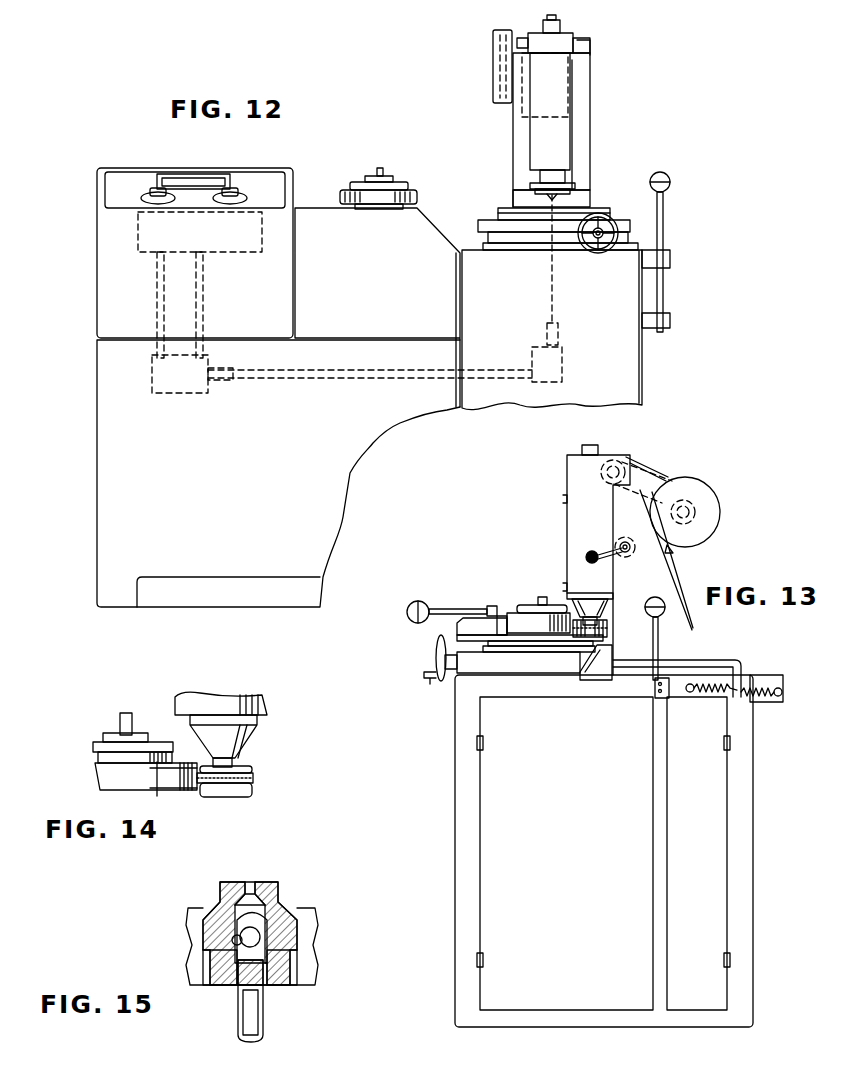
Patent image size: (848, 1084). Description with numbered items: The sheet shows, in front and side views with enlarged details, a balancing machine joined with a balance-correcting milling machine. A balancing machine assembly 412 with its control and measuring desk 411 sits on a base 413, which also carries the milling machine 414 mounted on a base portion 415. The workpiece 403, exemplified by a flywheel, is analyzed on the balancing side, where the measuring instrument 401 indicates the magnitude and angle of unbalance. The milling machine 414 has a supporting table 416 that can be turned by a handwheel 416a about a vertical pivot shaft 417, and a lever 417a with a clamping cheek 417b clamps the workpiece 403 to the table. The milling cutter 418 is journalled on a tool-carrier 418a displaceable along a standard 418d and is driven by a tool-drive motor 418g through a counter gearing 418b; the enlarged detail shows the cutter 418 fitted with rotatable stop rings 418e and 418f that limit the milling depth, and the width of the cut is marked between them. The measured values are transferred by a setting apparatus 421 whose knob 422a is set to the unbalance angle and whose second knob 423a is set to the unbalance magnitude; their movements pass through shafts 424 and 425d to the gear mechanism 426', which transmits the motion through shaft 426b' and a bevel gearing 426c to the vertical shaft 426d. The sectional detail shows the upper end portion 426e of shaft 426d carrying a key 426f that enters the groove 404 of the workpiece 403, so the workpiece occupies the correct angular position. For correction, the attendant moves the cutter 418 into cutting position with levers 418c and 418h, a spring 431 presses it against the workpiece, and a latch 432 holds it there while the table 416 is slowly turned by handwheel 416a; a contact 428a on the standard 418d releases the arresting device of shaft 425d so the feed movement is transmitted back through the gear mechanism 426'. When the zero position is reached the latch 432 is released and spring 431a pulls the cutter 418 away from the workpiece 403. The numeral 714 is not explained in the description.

In FIG. 12, the measuring instrument 401 is at (201, 177).
In FIG. 12, the workpiece 403 is at (523, 198).
In FIG. 13, the workpiece 403 is at (511, 620).
In FIG. 14, the workpiece 403 is at (105, 777).
In FIG. 15, the workpiece 403 is at (306, 916).
In FIG. 15, the groove 404 is at (243, 912).
In FIG. 12, the control and measuring desk 411 is at (291, 170).
In FIG. 12, the balancing machine assembly 412 is at (300, 212).
In FIG. 12, the base 413 is at (380, 168).
In FIG. 12, the milling machine 414 is at (573, 111).
In FIG. 13, the milling machine 414 is at (567, 545).
In FIG. 12, the base portion 415 is at (642, 368).
In FIG. 13, the base portion 415 is at (483, 811).
In FIG. 12, the supporting table 416 is at (602, 216).
In FIG. 13, the supporting table 416 is at (457, 629).
In FIG. 12, the handwheel 416a is at (618, 234).
In FIG. 13, the handwheel 416a is at (440, 658).
In FIG. 13, the vertical pivot shaft 417 is at (542, 600).
In FIG. 14, the vertical pivot shaft 417 is at (126, 712).
In FIG. 13, the lever 417a is at (438, 604).
In FIG. 13, the clamping cheek 417b is at (502, 645).
In FIG. 13, the milling cutter 418 is at (607, 630).
In FIG. 14, the milling cutter 418 is at (253, 779).
In FIG. 13, the tool-carrier 418a is at (567, 565).
In FIG. 12, the counter gearing 418b is at (493, 50).
In FIG. 13, the counter gearing 418b is at (631, 463).
In FIG. 12, the lever 418c is at (672, 242).
In FIG. 13, the lever 418c is at (660, 636).
In FIG. 13, the standard 418d is at (668, 571).
In FIG. 14, the rotatable stop ring 418e is at (246, 768).
In FIG. 14, the rotatable stop ring 418f is at (236, 798).
In FIG. 12, the tool-drive motor 418g is at (590, 58).
In FIG. 13, the tool-drive motor 418g is at (705, 493).
In FIG. 13, the lever 418h is at (597, 563).
In FIG. 12, the setting apparatus 421 is at (252, 251).
In FIG. 12, the knob 422a is at (156, 189).
In FIG. 12, the second knob 423a is at (238, 190).
In FIG. 12, the shaft 424 is at (156, 298).
In FIG. 12, the shaft 425d is at (204, 284).
In FIG. 12, the gear mechanism 426' is at (180, 391).
In FIG. 12, the shaft 426b' is at (370, 389).
In FIG. 12, the bevel gearing 426c is at (554, 372).
In FIG. 15, the shaft 426d is at (262, 1035).
In FIG. 12, the upper end portion 426e is at (566, 193).
In FIG. 15, the upper end portion 426e is at (262, 945).
In FIG. 12, the key 426f is at (549, 172).
In FIG. 15, the key 426f is at (222, 943).
In FIG. 13, the contact 428a is at (598, 673).
In FIG. 13, the spring 431 is at (705, 694).
In FIG. 13, the spring 431a is at (766, 703).
In FIG. 12, the latch 432 is at (671, 261).
In FIG. 13, the latch 432 is at (668, 699).
In FIG. 14, the cup wheel 714 is at (219, 700).